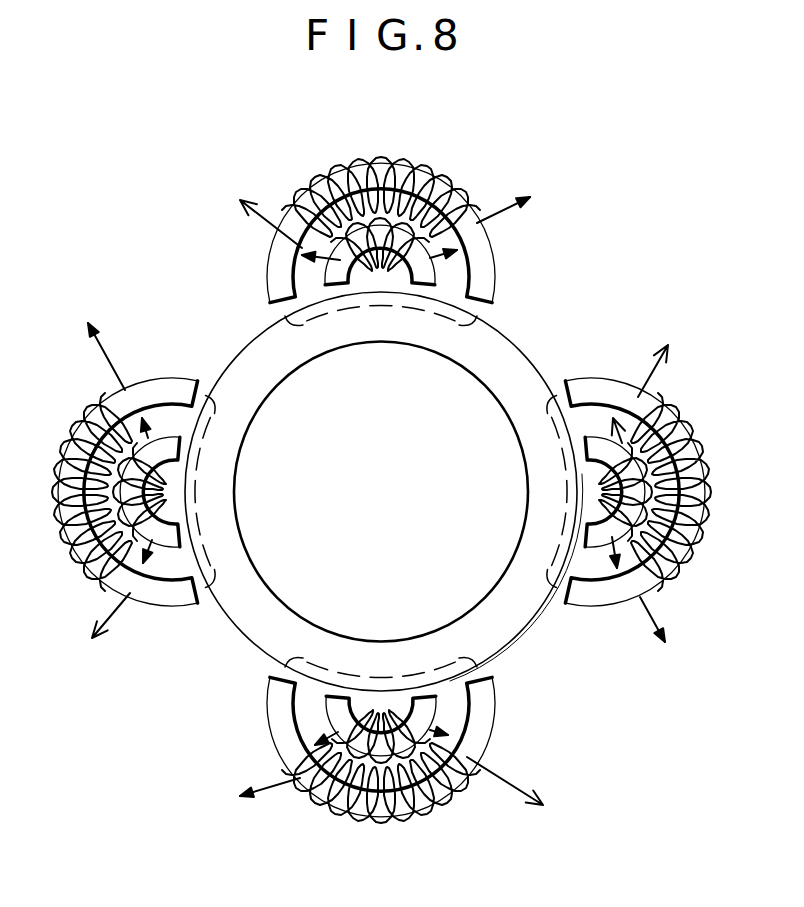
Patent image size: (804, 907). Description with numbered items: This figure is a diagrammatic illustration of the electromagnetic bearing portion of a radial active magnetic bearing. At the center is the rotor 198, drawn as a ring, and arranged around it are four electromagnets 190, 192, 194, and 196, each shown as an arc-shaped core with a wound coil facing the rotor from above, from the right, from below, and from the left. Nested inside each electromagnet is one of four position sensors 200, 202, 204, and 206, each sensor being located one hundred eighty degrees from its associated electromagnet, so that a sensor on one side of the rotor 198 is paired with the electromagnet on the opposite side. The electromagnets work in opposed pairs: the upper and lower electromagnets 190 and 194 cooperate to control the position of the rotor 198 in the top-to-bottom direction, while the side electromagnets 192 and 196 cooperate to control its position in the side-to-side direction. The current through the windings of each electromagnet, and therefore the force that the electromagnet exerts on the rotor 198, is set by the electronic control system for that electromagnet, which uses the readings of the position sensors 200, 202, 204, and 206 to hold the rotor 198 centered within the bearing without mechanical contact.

The electromagnet 190 is at (481, 270).
The electromagnet 192 is at (602, 350).
The electromagnet 194 is at (278, 697).
The electromagnet 196 is at (193, 332).
The rotor 198 is at (500, 342).
The position sensor 200 is at (433, 712).
The position sensor 202 is at (167, 535).
The position sensor 204 is at (333, 272).
The position sensor 206 is at (598, 535).